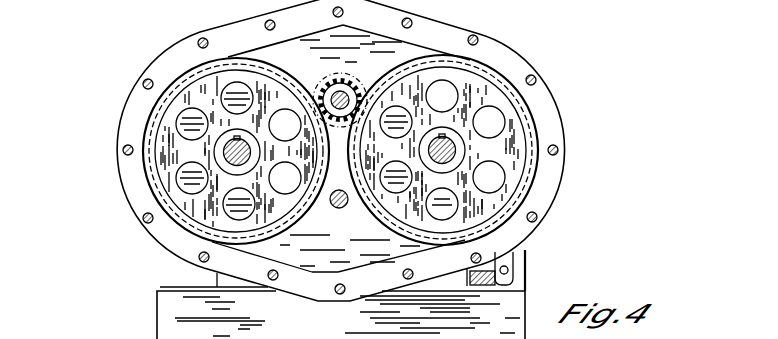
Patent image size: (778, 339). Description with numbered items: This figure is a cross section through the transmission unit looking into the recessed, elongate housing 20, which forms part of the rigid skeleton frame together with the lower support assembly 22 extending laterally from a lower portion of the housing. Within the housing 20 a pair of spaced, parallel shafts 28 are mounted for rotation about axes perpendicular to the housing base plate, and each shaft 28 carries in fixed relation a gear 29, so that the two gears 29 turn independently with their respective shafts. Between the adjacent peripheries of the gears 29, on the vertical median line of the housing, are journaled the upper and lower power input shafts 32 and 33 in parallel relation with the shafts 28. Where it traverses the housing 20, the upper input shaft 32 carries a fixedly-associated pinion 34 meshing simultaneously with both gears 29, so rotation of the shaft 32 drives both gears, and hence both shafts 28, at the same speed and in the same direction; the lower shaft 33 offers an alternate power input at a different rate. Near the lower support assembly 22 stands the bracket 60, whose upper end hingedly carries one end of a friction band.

The housing 20 is at (187, 172).
The lower support assembly 22 is at (341, 306).
The shaft 28 is at (238, 140).
The gear 29 is at (165, 130).
The upper power input shaft 32 is at (347, 90).
The lower power input shaft 33 is at (334, 207).
The pinion 34 is at (340, 77).
The bracket 60 is at (514, 268).